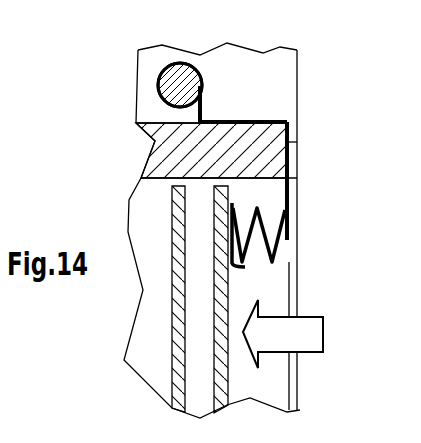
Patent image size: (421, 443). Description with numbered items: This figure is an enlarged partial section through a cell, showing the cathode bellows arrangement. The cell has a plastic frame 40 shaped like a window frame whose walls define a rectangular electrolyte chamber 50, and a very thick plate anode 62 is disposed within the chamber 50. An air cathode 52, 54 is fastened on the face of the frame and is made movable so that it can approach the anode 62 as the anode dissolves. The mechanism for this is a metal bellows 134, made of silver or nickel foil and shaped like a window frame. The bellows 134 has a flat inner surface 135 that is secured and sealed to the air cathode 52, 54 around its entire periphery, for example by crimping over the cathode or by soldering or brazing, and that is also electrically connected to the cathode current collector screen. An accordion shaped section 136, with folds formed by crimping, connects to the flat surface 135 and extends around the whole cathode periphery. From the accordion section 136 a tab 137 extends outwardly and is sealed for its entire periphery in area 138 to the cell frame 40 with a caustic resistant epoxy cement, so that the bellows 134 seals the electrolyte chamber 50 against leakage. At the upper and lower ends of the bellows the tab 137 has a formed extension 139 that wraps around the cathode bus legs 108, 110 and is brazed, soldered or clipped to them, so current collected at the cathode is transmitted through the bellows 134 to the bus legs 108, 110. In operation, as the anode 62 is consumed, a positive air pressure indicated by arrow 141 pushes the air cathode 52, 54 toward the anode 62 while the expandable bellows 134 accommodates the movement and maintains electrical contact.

The frame 40 is at (255, 120).
The electrolyte chamber 50 is at (145, 345).
The air cathode 52 is at (288, 299).
The air cathode 54 is at (225, 378).
The plate anode 62 is at (180, 379).
The cathode bus leg 108 is at (111, 85).
The cathode bus leg 110 is at (158, 86).
The metal bellows 134 is at (283, 234).
The flat inner surface 135 is at (233, 265).
The accordion shaped section 136 is at (268, 240).
The tab 137 is at (297, 142).
The sealing area 138 is at (270, 122).
The formed extension 139 is at (203, 86).
The arrow 141 is at (308, 337).